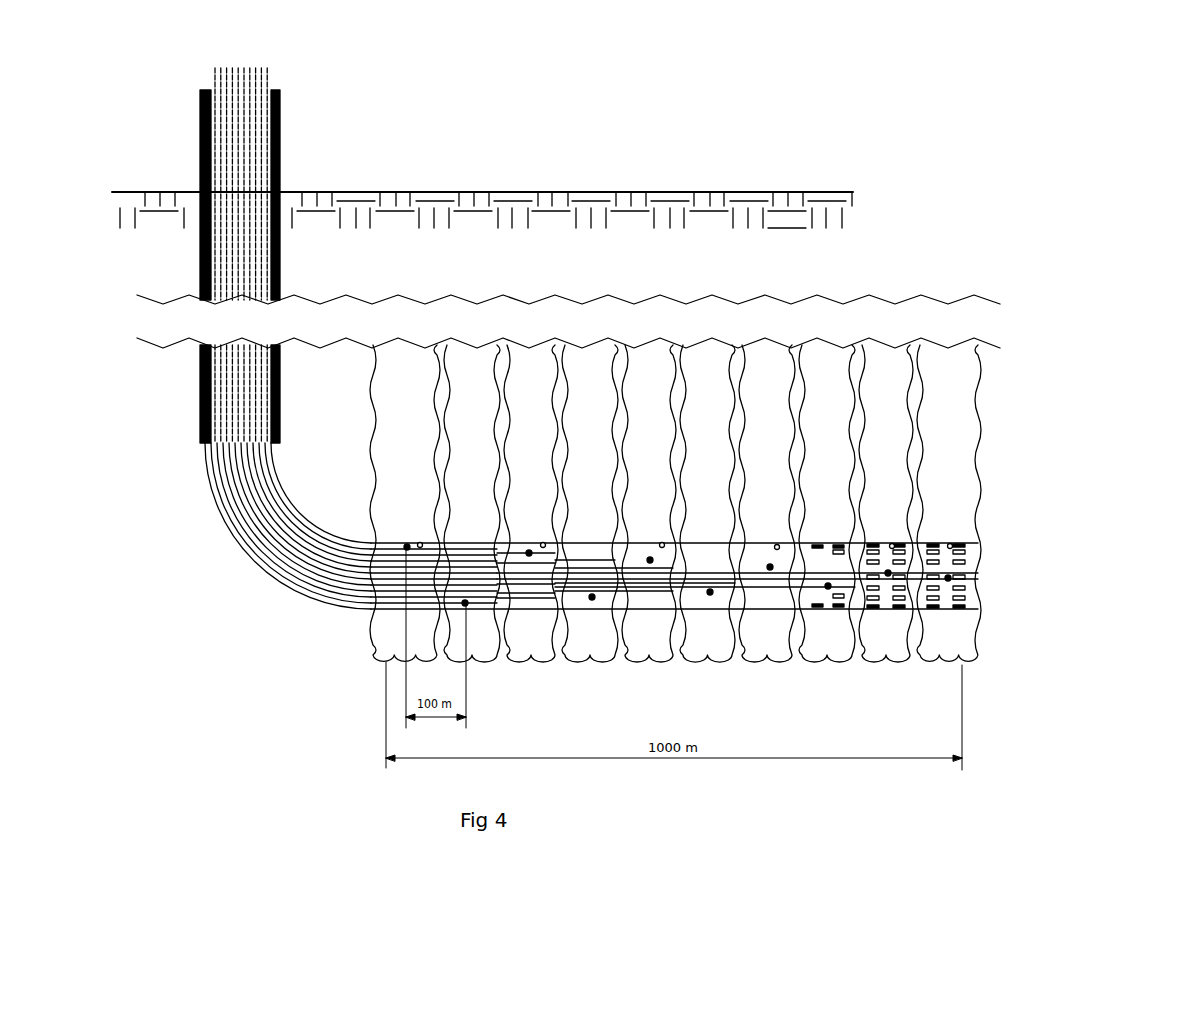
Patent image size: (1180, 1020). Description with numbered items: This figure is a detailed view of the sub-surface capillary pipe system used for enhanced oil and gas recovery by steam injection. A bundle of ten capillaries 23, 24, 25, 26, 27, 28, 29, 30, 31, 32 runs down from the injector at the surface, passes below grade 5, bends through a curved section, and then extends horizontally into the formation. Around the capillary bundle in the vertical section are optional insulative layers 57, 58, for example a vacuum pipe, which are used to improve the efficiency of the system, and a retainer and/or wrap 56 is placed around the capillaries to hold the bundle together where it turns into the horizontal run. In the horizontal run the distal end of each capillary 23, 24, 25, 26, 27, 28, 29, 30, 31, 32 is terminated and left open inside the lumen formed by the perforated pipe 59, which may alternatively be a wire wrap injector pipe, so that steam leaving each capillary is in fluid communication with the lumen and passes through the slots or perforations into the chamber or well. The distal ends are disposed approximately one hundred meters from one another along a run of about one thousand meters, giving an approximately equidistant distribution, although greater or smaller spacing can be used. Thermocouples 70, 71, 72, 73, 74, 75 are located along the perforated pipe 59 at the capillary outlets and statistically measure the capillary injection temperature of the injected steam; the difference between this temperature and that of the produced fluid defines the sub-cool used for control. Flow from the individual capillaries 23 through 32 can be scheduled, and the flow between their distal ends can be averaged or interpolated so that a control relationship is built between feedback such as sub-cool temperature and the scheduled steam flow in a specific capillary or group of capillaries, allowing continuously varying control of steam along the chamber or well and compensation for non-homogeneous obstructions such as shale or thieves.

The grade 5 is at (747, 191).
The insulative layer 57 is at (272, 88).
The insulative layer 58 is at (280, 137).
The retainer and/or wrap 56 is at (272, 447).
The perforated pipe 59 is at (977, 543).
The capillary 23 is at (407, 547).
The capillary 24 is at (529, 553).
The capillary 25 is at (650, 560).
The capillary 26 is at (770, 567).
The capillary 27 is at (828, 586).
The capillary 28 is at (888, 573).
The capillary 29 is at (948, 578).
The capillary 30 is at (465, 603).
The capillary 31 is at (592, 597).
The capillary 32 is at (710, 592).
The thermocouple 70 is at (420, 545).
The thermocouple 71 is at (543, 545).
The thermocouple 72 is at (662, 545).
The thermocouple 73 is at (777, 547).
The thermocouple 74 is at (892, 546).
The thermocouple 75 is at (950, 546).